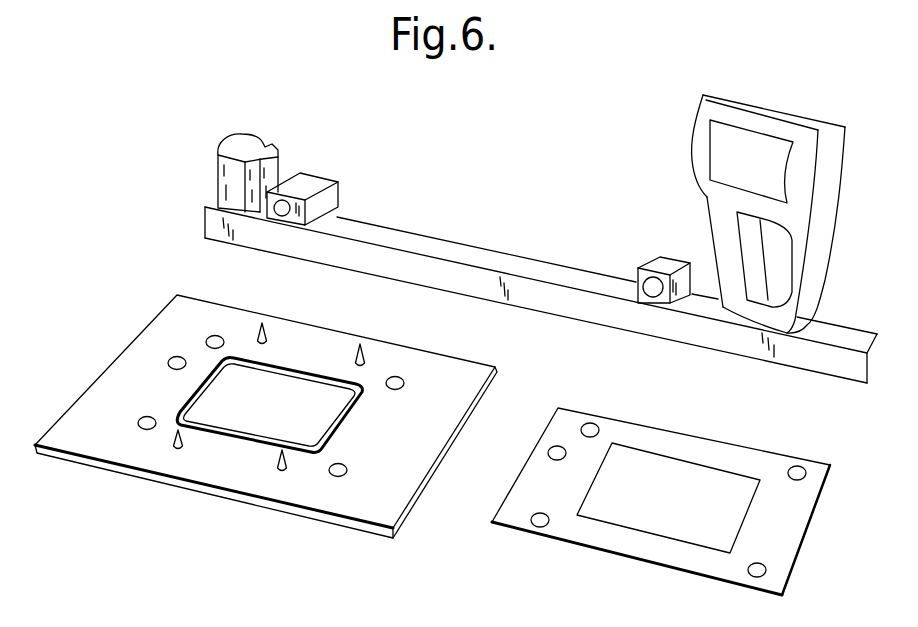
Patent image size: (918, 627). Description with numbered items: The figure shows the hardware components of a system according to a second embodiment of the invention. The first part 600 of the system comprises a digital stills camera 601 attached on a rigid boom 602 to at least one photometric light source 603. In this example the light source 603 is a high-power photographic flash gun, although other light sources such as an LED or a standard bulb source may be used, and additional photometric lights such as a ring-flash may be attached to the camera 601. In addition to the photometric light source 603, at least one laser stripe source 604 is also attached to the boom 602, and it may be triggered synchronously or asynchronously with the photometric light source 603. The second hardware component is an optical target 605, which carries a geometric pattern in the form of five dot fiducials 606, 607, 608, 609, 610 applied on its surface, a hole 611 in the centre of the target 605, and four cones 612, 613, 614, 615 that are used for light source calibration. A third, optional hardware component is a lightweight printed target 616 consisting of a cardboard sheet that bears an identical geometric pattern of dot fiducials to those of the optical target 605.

The first part of the system 600 is at (435, 178).
The digital stills camera 601 is at (323, 182).
The rigid boom 602 is at (532, 267).
The photometric light source 603 is at (707, 115).
The laser stripe source 604 is at (672, 265).
The optical target 605 is at (114, 354).
The dot fiducial 606 is at (219, 335).
The dot fiducial 607 is at (168, 363).
The dot fiducial 608 is at (139, 420).
The dot fiducial 609 is at (403, 379).
The dot fiducial 610 is at (339, 476).
The hole 611 is at (242, 434).
The cone 612 is at (270, 337).
The cone 613 is at (175, 448).
The cone 614 is at (282, 471).
The cone 615 is at (367, 354).
The lightweight printed target 616 is at (724, 437).